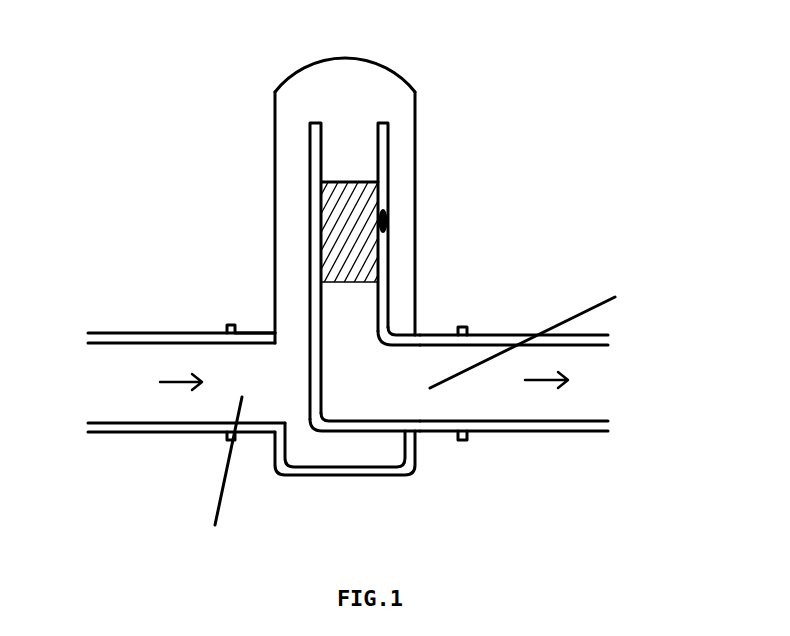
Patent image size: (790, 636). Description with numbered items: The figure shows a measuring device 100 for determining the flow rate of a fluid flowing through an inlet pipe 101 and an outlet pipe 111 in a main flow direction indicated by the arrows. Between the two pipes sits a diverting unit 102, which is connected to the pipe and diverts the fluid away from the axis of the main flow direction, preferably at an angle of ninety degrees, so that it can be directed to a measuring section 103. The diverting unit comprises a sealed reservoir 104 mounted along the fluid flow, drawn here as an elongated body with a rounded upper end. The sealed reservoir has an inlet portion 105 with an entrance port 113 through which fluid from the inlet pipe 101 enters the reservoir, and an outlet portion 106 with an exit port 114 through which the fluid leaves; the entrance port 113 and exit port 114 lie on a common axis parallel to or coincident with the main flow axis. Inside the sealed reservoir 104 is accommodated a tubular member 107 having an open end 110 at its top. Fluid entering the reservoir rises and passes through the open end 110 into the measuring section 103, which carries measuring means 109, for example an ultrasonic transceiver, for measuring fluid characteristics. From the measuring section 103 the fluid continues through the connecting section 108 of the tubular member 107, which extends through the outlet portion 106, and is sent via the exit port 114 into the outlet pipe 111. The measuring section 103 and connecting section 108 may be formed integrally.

The measuring device 100 is at (384, 281).
The inlet pipe 101 is at (142, 432).
The diverting unit 102 is at (253, 163).
The measuring section 103 is at (360, 260).
The sealed reservoir 104 is at (418, 112).
The inlet portion 105 is at (263, 322).
The outlet portion 106 is at (425, 328).
The tubular member 107 is at (390, 175).
The connecting section 108 is at (362, 385).
The measuring means 109 is at (390, 212).
The open end 110 is at (345, 143).
The outlet pipe 111 is at (542, 437).
The entrance port 113 is at (218, 480).
The exit port 114 is at (547, 333).